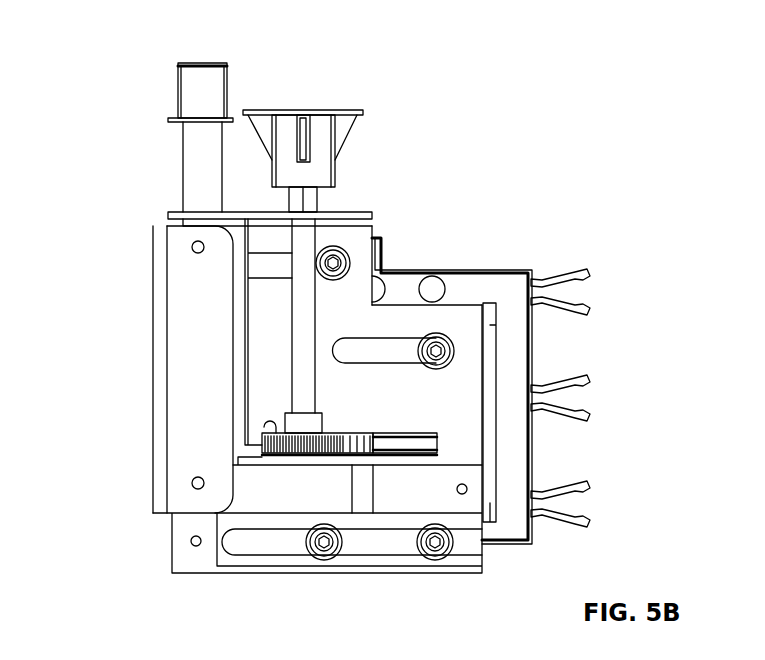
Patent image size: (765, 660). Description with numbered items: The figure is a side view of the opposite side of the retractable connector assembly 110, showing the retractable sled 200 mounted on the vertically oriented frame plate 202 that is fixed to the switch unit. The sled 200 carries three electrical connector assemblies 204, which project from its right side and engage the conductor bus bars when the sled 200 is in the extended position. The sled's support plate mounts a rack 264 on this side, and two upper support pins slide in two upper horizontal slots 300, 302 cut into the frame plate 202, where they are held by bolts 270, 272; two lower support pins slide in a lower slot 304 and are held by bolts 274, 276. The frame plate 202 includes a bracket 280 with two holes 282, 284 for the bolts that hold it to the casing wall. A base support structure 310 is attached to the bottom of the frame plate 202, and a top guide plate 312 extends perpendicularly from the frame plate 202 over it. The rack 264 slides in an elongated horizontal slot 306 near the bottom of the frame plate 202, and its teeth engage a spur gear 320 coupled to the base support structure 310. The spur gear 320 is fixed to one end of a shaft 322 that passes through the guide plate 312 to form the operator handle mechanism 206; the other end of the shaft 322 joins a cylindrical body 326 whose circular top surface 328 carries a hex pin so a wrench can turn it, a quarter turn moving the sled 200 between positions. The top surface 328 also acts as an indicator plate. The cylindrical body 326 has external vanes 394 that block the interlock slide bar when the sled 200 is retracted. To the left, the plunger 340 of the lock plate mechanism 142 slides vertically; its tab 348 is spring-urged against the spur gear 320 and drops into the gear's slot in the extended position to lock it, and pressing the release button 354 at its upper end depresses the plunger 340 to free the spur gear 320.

The retractable connector assembly 110 is at (138, 206).
The lock plate mechanism 142 is at (158, 100).
The retractable sled 200 is at (512, 373).
The frame plate 202 is at (440, 413).
The electrical connector assemblies 204 is at (600, 278).
The operator handle mechanism 206 is at (318, 112).
The rack 264 is at (368, 445).
The bolt 270 is at (340, 258).
The bolt 272 is at (453, 346).
The bolt 274 is at (335, 548).
The bolt 276 is at (442, 553).
The bracket 280 is at (197, 320).
The hole 282 is at (192, 248).
The hole 284 is at (193, 484).
The upper horizontal slot 300 is at (262, 270).
The upper horizontal slot 302 is at (370, 352).
The lower slot 304 is at (378, 546).
The elongated horizontal slot 306 is at (422, 432).
The base support structure 310 is at (307, 488).
The top guide plate 312 is at (298, 111).
The spur gear 320 is at (250, 456).
The shaft 322 is at (292, 334).
The cylindrical body 326 is at (327, 155).
The circular top surface 328 is at (257, 212).
The plunger 340 is at (195, 173).
The tab 348 is at (258, 444).
The release button 354 is at (190, 62).
The external vanes 394 is at (343, 129).